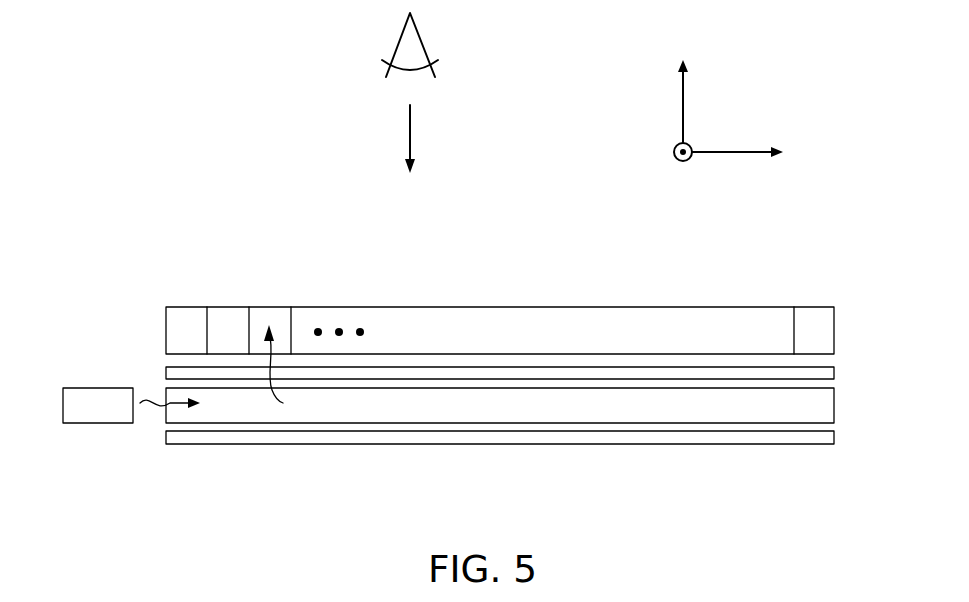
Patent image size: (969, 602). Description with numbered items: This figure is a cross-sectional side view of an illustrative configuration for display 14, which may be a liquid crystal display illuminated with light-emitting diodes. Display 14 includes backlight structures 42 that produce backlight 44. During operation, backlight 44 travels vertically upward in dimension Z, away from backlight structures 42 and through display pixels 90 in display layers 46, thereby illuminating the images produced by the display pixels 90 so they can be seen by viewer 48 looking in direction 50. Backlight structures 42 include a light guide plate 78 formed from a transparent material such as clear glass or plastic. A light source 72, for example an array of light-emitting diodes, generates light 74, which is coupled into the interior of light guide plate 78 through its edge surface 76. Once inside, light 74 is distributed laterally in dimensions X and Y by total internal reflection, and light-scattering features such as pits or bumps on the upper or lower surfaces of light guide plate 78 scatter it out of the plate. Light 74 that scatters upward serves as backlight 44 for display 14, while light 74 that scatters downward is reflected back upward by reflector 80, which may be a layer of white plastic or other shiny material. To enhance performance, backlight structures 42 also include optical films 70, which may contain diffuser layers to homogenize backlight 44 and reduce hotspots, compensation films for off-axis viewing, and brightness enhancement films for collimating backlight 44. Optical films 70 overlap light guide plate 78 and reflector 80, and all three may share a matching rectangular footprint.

The display 14 is at (139, 196).
The backlight structures 42 is at (860, 365).
The backlight 44 is at (283, 403).
The display layers 46 is at (166, 327).
The viewer 48 is at (425, 42).
The direction 50 is at (410, 135).
The optical films 70 is at (166, 372).
The light source 72 is at (98, 423).
The light 74 is at (138, 405).
The edge surface 76 is at (464, 436).
The light guide plate 78 is at (785, 405).
The reflector 80 is at (676, 440).
The display pixels 90 is at (207, 300).